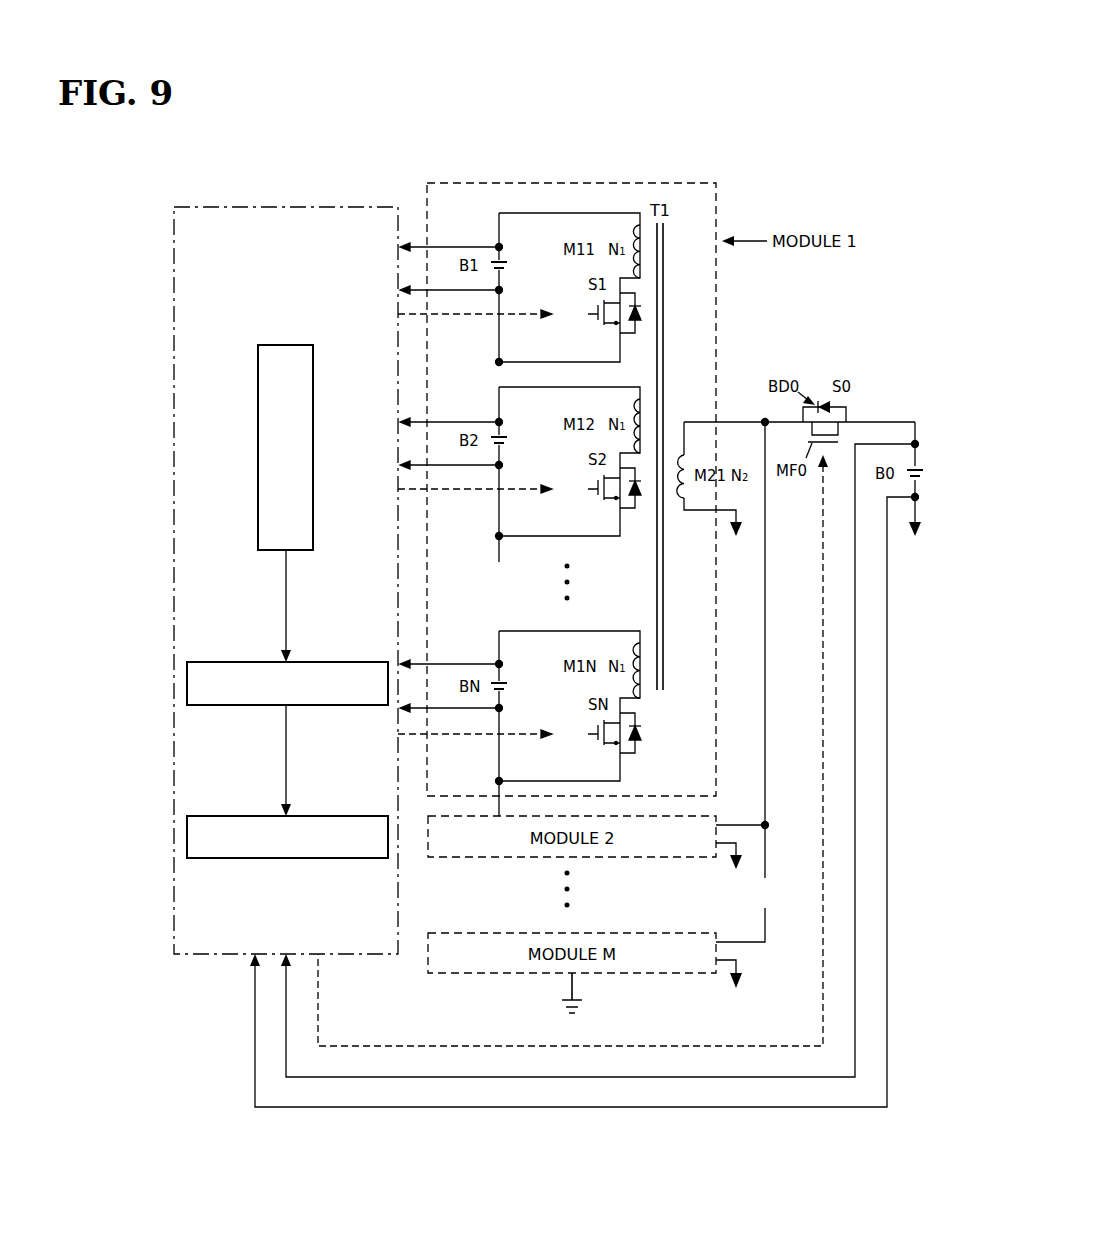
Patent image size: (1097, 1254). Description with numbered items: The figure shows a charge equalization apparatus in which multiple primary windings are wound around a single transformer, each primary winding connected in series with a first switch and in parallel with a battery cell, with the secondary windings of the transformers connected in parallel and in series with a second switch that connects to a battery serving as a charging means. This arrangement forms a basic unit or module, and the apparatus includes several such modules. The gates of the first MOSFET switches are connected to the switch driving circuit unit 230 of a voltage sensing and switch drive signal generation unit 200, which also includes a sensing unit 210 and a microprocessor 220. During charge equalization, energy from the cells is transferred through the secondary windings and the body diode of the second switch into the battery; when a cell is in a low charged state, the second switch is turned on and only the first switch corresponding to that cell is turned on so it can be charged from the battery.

The voltage sensing and switch drive signal generation unit 200 is at (288, 207).
The sensing unit 210 is at (258, 453).
The microprocessor 220 is at (187, 683).
The switch driving circuit unit 230 is at (187, 837).